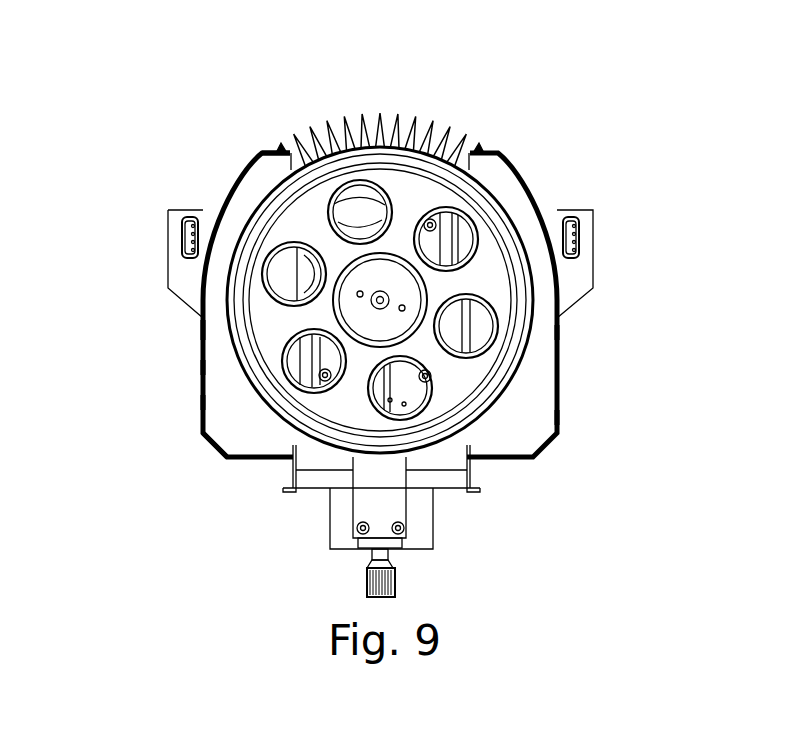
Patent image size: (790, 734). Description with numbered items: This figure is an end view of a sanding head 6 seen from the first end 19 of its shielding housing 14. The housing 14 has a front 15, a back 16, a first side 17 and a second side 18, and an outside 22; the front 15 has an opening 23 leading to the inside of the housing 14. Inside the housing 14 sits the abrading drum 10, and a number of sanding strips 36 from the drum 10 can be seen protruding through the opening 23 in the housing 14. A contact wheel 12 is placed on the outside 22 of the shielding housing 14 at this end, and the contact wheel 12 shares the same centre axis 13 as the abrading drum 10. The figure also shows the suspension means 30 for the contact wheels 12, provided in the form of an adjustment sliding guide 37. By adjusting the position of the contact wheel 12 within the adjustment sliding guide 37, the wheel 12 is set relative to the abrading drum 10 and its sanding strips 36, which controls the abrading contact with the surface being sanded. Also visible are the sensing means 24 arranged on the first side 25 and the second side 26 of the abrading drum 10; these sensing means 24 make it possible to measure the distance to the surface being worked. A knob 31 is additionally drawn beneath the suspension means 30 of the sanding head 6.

The sanding head 6 is at (202, 453).
The abrading drum 10 is at (451, 239).
The contact wheel 12 is at (463, 390).
The centre axis 13 is at (383, 299).
The shielding housing 14 is at (558, 435).
The front 15 is at (355, 110).
The back 16 is at (530, 460).
The first side 17 is at (202, 330).
The second side 18 is at (560, 420).
The first end 19 is at (533, 360).
The outside 22 is at (198, 400).
The opening 23 is at (262, 145).
The sensing means 24 is at (183, 226).
The first side 25 is at (202, 367).
The second side 26 is at (560, 333).
The suspension means 30 is at (320, 460).
The adjustment knob 31 is at (396, 585).
The sanding strips 36 is at (415, 122).
The adjustment sliding guide 37 is at (432, 212).